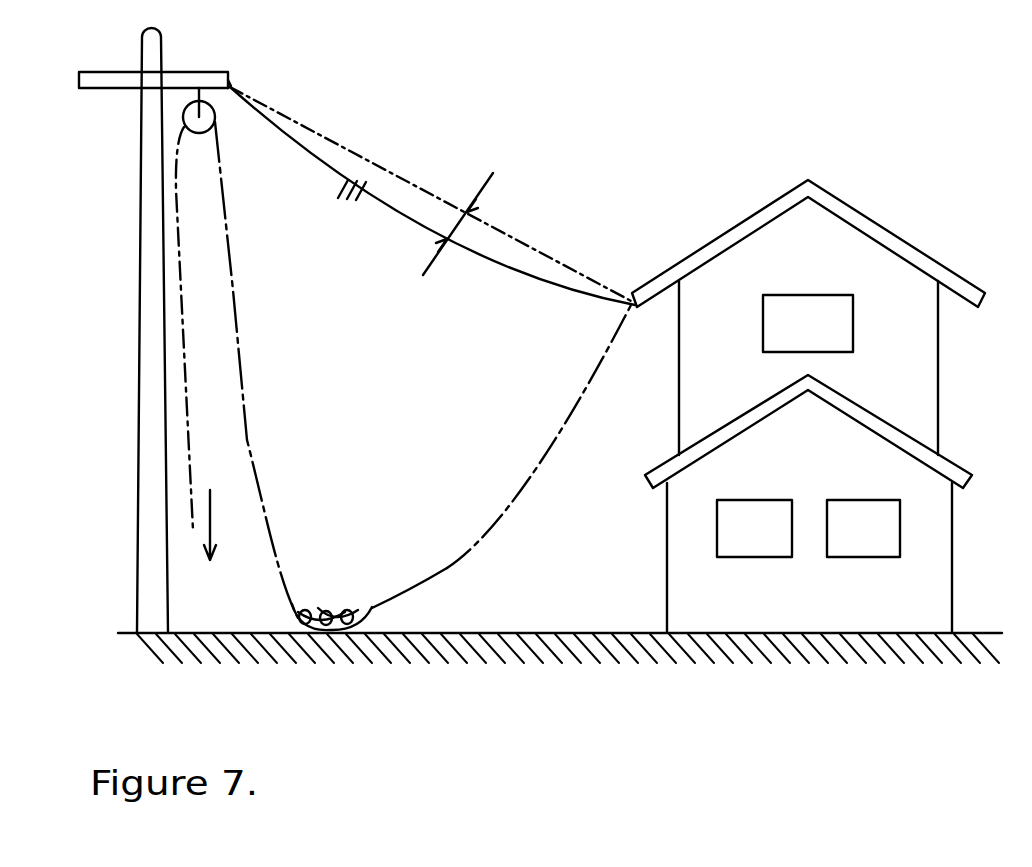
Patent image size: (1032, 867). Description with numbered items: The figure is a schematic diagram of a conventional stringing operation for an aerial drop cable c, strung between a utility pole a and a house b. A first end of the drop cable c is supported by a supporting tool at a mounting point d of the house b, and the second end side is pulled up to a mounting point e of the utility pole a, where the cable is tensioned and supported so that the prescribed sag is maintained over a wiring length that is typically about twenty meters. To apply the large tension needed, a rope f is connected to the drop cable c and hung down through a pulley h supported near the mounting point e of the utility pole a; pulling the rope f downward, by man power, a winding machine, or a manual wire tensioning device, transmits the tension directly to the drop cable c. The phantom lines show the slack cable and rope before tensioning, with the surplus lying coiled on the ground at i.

The utility pole a is at (146, 412).
The house b is at (679, 394).
The drop cable c is at (502, 263).
The mounting point of the house d is at (638, 372).
The mounting point of the utility pole e is at (231, 86).
The rope f is at (247, 440).
The pulley h is at (197, 133).
The coiled cable on ground i is at (329, 610).